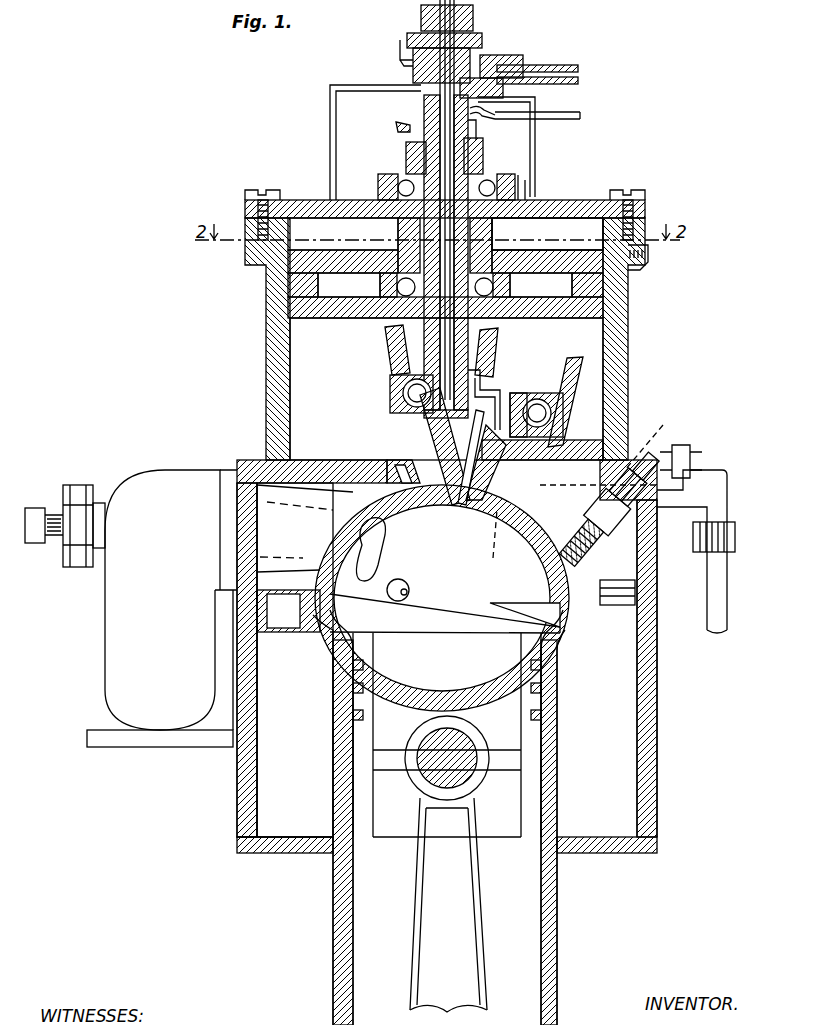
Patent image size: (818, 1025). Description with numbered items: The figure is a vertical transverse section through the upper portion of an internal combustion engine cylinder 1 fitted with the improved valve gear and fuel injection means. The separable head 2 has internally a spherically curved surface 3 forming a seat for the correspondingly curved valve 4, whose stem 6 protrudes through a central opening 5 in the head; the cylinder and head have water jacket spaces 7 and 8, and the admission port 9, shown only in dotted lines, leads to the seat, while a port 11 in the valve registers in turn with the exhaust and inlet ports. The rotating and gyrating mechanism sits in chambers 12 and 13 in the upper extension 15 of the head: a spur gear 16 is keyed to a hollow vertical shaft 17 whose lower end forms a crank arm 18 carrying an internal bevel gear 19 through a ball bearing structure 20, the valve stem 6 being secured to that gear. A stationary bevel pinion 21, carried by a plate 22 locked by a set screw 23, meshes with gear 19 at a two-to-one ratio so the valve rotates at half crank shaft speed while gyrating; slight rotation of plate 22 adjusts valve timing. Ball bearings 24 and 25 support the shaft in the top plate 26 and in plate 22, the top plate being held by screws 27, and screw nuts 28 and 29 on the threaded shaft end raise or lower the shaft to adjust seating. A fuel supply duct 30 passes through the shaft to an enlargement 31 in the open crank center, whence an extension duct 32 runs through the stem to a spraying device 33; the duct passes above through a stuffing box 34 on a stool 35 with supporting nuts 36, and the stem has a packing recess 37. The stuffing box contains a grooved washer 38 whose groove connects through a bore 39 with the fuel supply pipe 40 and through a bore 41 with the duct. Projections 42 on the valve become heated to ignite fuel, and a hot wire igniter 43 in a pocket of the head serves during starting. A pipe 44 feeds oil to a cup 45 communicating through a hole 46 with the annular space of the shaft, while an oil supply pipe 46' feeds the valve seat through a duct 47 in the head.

The engine cylinder 1 is at (333, 906).
The separable head 2 is at (330, 466).
The spherically curved surface 3 is at (378, 470).
The valve 4 is at (410, 505).
The central opening 5 is at (402, 470).
The stem 6 is at (432, 445).
The water jacket space 7 is at (295, 660).
The water jacket space 8 is at (288, 603).
The admission port 9 is at (222, 474).
The port 11 is at (388, 552).
The chamber 12 is at (446, 389).
The chamber 13 is at (552, 210).
The upper extension 15 is at (266, 352).
The spur gear 16 is at (296, 276).
The vertical shaft 17 is at (407, 160).
The crank arm 18 is at (515, 400).
The internal bevel gear 19 is at (570, 357).
The ball bearing structure 20 is at (403, 393).
The bevel pinion 21 is at (496, 345).
The plate 22 is at (340, 319).
The set screw 23 is at (646, 265).
The ball bearing 24 is at (517, 192).
The ball bearing 25 is at (532, 202).
The top plate 26 is at (522, 200).
The screw 27 is at (256, 190).
The screw nut 28 is at (484, 160).
The screw nut 29 is at (478, 147).
The fuel supply duct 30 is at (425, 110).
The enlargement 31 is at (488, 392).
The extension duct 32 is at (572, 432).
The spraying device 33 is at (462, 512).
The stuffing box 34 is at (483, 45).
The stool 35 is at (330, 120).
The supporting nuts 36 is at (474, 14).
The packing recess 37 is at (545, 462).
The externally grooved washer 38 is at (413, 68).
The bore 39 is at (527, 60).
The fuel supply pipe 40 is at (562, 66).
The bore 41 is at (505, 74).
The projections 42 is at (385, 600).
The hot wire igniter 43 is at (578, 585).
The pipe 44 is at (582, 118).
The cup 45 is at (500, 117).
The hole 46 is at (381, 129).
The oil supply pipe 46' is at (712, 551).
The duct 47 is at (590, 495).